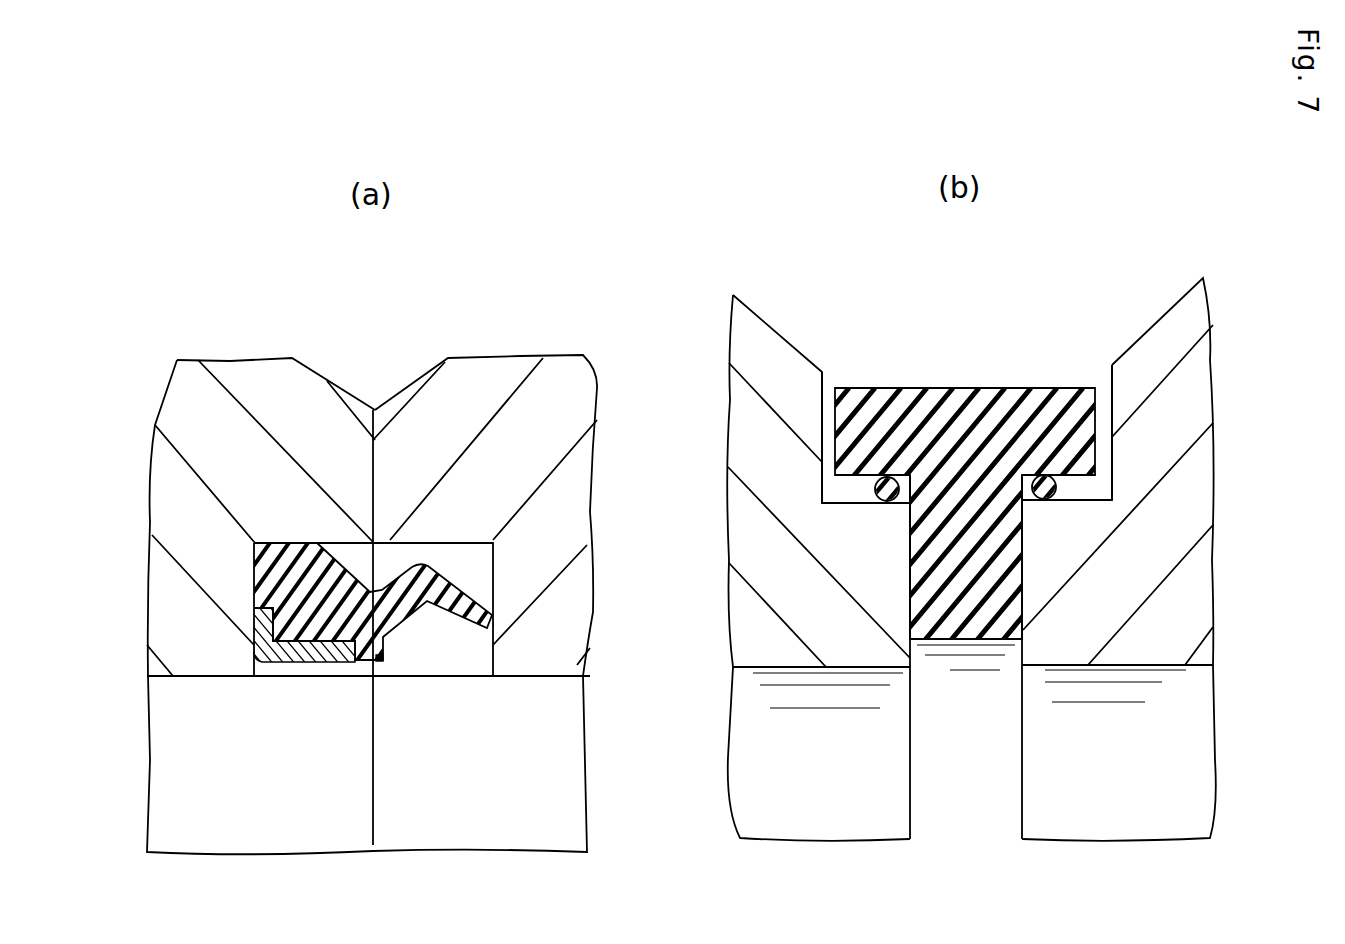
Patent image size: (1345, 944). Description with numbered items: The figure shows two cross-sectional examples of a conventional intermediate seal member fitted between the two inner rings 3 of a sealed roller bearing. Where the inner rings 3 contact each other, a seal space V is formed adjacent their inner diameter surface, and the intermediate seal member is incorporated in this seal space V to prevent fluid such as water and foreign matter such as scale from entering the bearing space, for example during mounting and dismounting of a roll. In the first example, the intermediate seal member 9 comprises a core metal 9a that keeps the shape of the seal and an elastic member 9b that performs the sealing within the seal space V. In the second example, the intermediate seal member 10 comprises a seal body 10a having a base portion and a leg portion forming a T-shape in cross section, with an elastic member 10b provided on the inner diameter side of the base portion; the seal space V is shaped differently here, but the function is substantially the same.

The inner ring 3 is at (263, 467).
The seal space V is at (458, 660).
The intermediate seal member 9 is at (322, 688).
The core metal 9a is at (277, 662).
The elastic member 9b is at (370, 662).
The intermediate seal member 10 is at (944, 380).
The seal body 10a is at (972, 627).
The elastic member 10b is at (880, 502).